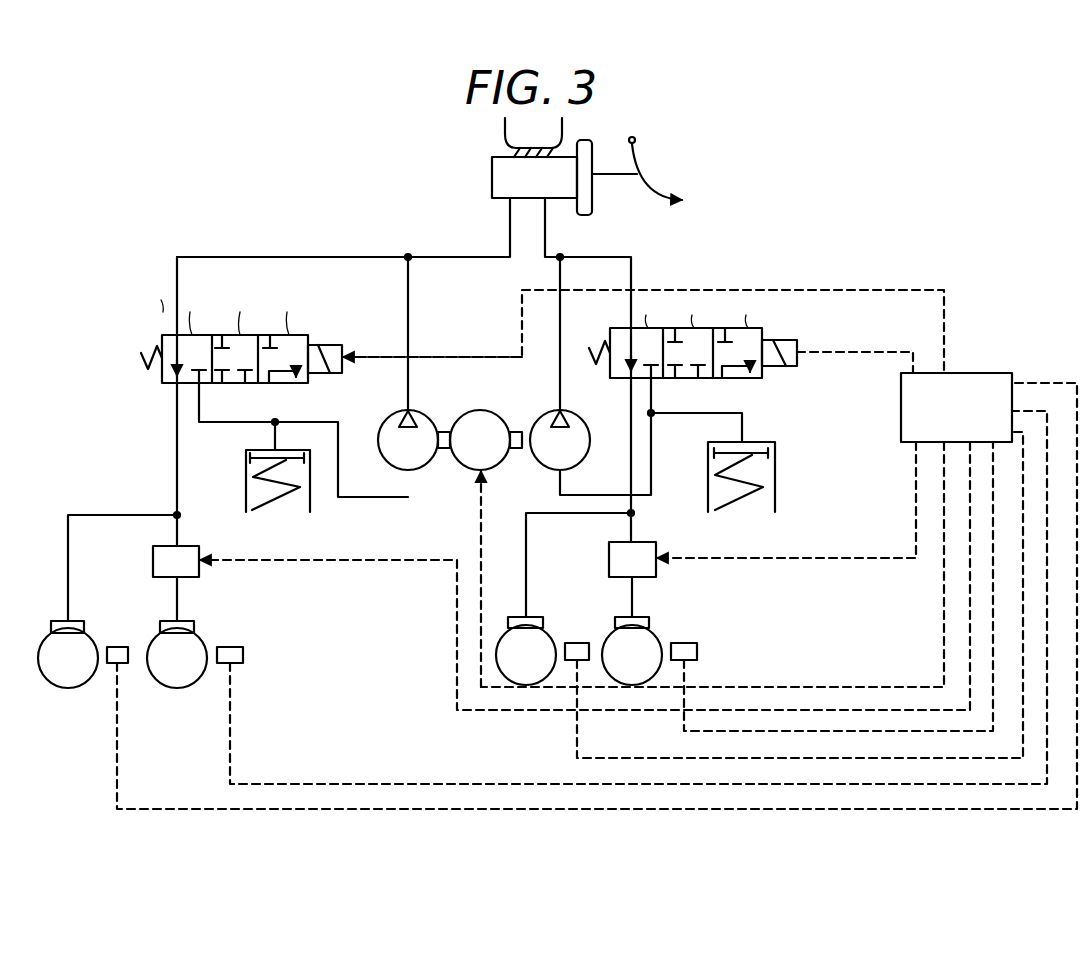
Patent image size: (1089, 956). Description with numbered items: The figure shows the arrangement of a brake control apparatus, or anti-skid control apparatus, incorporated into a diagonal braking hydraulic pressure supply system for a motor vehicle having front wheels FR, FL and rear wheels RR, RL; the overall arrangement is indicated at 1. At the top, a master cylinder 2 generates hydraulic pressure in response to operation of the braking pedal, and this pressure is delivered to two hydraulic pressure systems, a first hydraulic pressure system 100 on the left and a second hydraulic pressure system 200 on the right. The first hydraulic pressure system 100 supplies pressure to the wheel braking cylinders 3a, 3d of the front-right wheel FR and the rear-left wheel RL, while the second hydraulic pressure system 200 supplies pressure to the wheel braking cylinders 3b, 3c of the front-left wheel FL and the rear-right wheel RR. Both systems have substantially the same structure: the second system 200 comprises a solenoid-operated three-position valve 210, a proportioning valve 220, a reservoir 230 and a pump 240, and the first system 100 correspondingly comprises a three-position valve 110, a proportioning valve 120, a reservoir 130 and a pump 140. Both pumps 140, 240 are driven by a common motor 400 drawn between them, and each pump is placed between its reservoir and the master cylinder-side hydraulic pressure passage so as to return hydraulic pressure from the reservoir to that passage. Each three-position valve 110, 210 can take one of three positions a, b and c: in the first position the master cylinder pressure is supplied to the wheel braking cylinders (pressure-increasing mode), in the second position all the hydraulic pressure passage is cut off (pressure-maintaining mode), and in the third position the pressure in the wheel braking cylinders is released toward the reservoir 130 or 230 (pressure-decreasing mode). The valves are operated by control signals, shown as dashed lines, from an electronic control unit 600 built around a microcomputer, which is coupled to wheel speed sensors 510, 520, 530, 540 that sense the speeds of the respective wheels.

The brake system 1 is at (176, 252).
The master cylinder 2 is at (492, 177).
The first hydraulic pressure system 100 is at (313, 251).
The second hydraulic pressure system 200 is at (638, 258).
The solenoid-operated three-position valve 110 is at (309, 326).
The solenoid-operated three-position valve 210 is at (772, 327).
The proportioning valve 120 is at (153, 563).
The proportioning valve 220 is at (609, 559).
The reservoir 130 is at (310, 503).
The reservoir 230 is at (775, 497).
The pump 140 is at (430, 413).
The pump 240 is at (551, 412).
The motor 400 is at (480, 410).
The wheel speed sensor 510 is at (117, 647).
The wheel speed sensor 520 is at (230, 647).
The wheel speed sensor 530 is at (577, 643).
The wheel speed sensor 540 is at (697, 652).
The electronic control unit (ECU) 600 is at (977, 373).
The wheel braking cylinder 3a is at (68, 688).
The wheel braking cylinder 3b is at (500, 633).
The wheel braking cylinder 3c is at (658, 634).
The wheel braking cylinder 3d is at (177, 688).